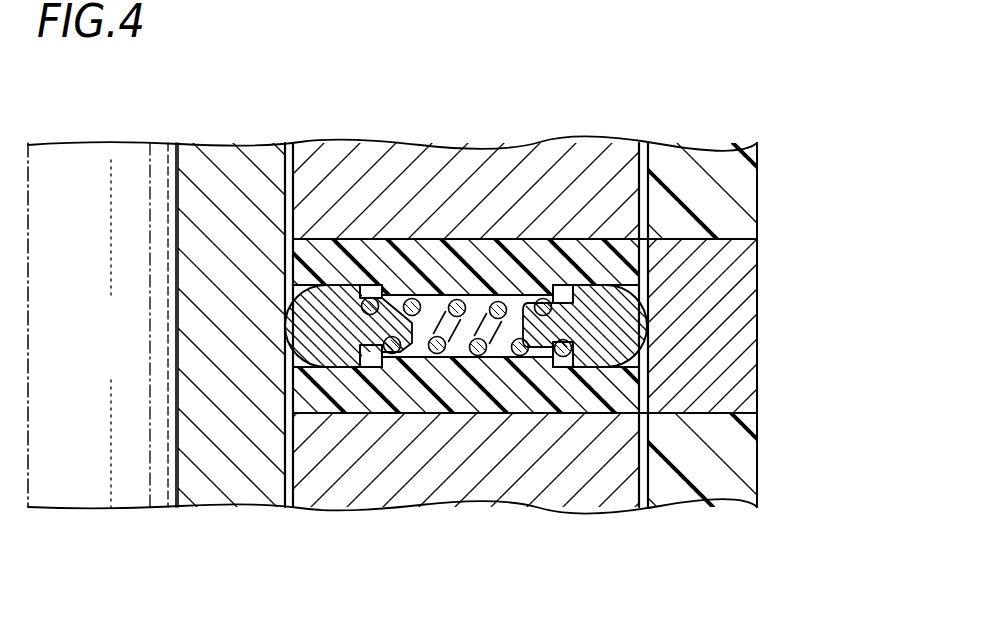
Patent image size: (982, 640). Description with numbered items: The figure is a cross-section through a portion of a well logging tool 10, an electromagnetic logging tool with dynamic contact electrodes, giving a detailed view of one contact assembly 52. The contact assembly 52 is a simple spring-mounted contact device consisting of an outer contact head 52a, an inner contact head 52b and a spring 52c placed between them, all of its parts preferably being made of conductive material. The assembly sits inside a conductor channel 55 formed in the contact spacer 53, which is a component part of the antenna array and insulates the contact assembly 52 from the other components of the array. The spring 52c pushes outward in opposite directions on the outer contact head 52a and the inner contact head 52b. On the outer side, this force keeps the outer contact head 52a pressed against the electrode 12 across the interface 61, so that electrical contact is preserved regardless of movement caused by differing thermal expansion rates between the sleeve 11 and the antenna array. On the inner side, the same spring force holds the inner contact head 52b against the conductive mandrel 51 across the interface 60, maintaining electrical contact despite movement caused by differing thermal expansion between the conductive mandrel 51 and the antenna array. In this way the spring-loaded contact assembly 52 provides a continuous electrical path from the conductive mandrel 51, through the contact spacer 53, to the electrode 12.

The well logging tool 10 is at (803, 398).
The sleeve 11 is at (717, 487).
The electrode 12 is at (733, 293).
The conductive mandrel 51 is at (217, 490).
The contact assembly 52 is at (602, 72).
The outer contact head 52a is at (593, 295).
The inner contact head 52b is at (340, 290).
The spring 52c is at (437, 300).
The contact spacer 53 is at (480, 402).
The conductor channel 55 is at (413, 365).
The interface 60 is at (292, 500).
The interface 61 is at (645, 503).